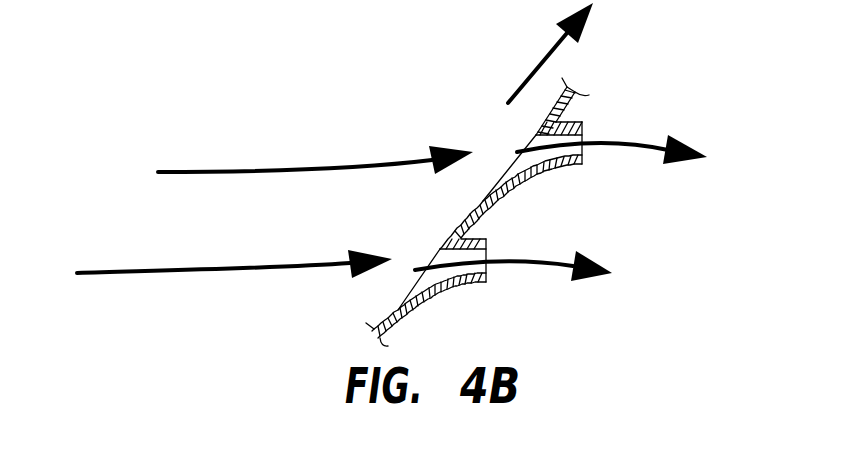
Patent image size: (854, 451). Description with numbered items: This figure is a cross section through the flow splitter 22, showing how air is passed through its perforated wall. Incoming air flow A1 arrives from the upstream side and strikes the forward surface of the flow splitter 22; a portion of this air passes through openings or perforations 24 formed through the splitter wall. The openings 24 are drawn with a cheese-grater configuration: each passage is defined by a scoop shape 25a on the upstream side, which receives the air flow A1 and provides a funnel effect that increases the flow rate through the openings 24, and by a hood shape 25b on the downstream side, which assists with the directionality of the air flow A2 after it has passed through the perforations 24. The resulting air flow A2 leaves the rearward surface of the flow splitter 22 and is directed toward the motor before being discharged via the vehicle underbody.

The flow splitter 22 is at (466, 216).
The openings or perforations 24 is at (511, 165).
The scoop shape 25a is at (533, 141).
The hood shape 25b is at (578, 121).
The air flow A1 is at (235, 173).
The air flow A2 is at (617, 143).